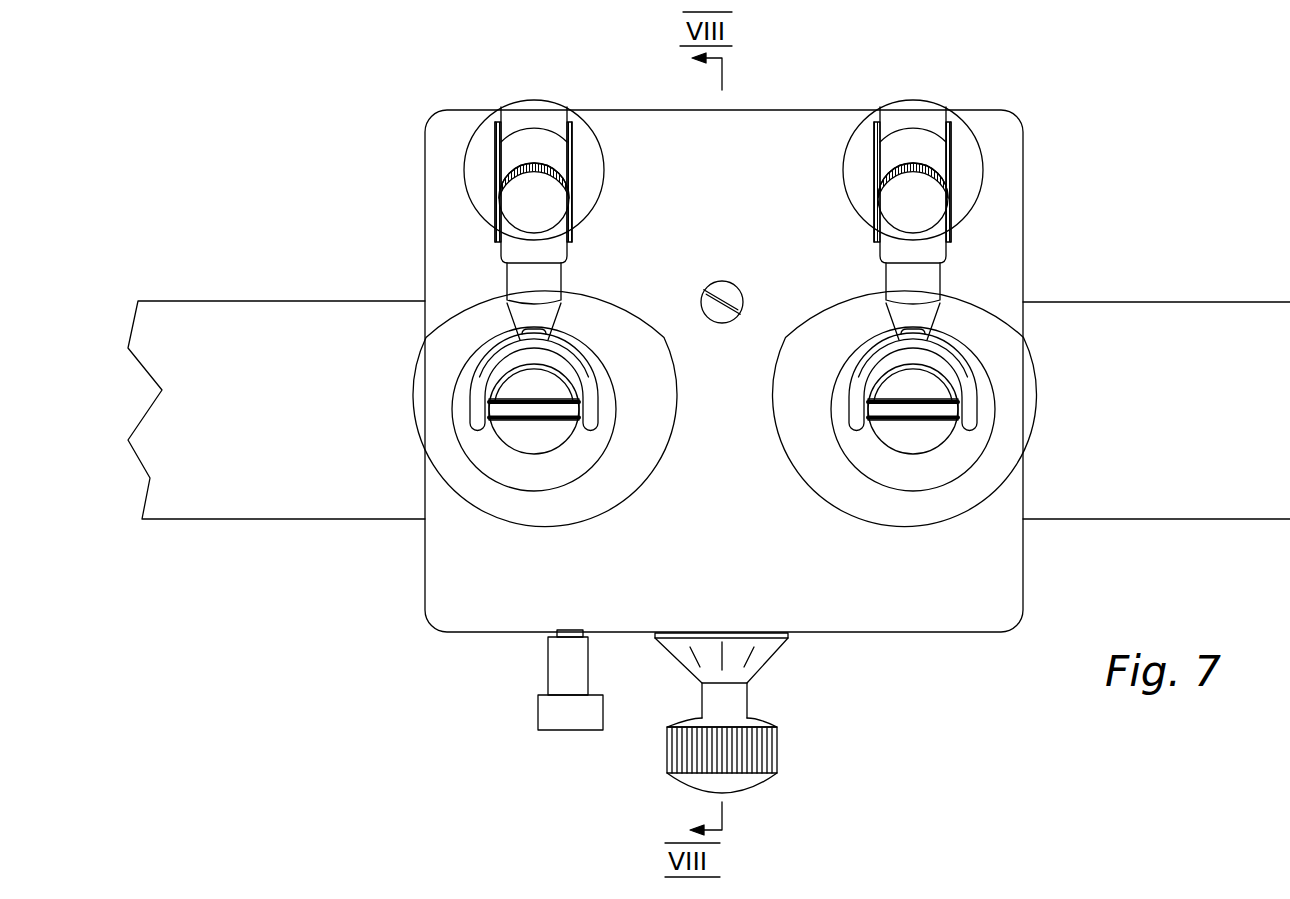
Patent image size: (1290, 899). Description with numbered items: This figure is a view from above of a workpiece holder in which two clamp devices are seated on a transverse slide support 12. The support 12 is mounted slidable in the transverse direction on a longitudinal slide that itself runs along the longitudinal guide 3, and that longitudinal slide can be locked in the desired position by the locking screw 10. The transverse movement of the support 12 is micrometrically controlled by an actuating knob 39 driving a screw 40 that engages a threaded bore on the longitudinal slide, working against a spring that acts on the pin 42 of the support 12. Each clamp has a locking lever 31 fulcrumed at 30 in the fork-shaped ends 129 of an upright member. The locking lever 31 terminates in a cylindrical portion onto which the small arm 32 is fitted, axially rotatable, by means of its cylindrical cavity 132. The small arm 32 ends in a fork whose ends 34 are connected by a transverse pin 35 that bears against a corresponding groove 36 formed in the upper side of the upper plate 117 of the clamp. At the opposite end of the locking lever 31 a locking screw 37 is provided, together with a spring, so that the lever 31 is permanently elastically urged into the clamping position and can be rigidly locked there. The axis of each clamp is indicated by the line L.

The longitudinal guide 3 is at (1245, 507).
The locking screw 10 is at (553, 713).
The transverse slide support 12 is at (903, 623).
The fulcrum 30 is at (570, 205).
The locking lever 31 is at (508, 248).
The small arm 32 is at (548, 317).
The fork ends 34 is at (590, 390).
The transverse pin 35 is at (513, 412).
The groove 36 is at (552, 420).
The locking screw 37 is at (553, 188).
The actuating knob 39 is at (777, 754).
The screw 40 is at (742, 633).
The pin 42 is at (737, 293).
The upper plate 117 is at (527, 487).
The fork-shaped ends 129 is at (492, 132).
The cylindrical cavity 132 is at (553, 278).
The axis / line L is at (413, 393).